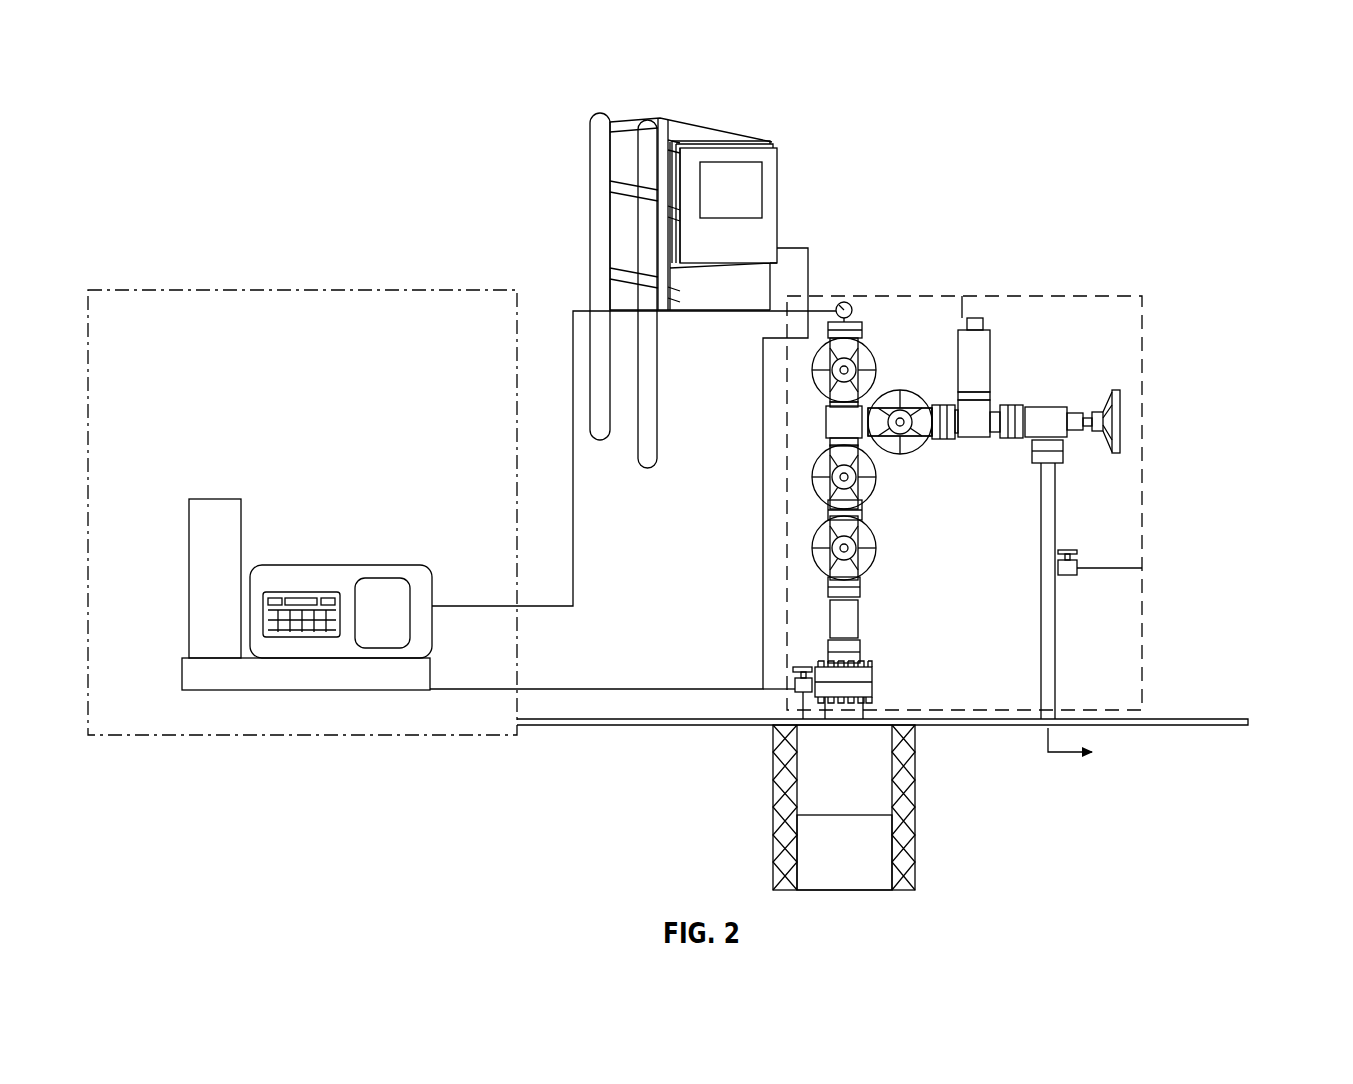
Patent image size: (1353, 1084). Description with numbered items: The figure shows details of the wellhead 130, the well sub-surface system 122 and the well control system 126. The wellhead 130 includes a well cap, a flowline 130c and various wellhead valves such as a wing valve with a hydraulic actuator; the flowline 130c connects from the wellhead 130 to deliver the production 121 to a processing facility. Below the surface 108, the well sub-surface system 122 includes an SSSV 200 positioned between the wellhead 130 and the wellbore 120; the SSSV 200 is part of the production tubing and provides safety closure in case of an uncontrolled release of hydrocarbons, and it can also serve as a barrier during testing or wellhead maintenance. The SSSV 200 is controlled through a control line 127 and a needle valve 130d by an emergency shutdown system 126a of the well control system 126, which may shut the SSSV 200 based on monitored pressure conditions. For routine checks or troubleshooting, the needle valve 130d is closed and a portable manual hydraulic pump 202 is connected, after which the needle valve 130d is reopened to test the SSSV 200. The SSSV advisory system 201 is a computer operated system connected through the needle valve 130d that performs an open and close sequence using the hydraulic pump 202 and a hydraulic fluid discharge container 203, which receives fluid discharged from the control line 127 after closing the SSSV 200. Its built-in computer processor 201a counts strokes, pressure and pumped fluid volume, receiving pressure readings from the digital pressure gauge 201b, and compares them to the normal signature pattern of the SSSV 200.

The well control system 126 is at (563, 118).
The emergency shutdown system (ESD) 126a is at (757, 120).
The SSSV advisory system 201 is at (400, 285).
The hydraulic fluid discharge container 203 is at (208, 490).
The computer processor 201a is at (350, 565).
The hydraulic pump 202 is at (265, 693).
The control line 127 is at (660, 688).
The digital pressure gauge 201b is at (849, 302).
The wellhead 130 is at (1040, 297).
The flowline 130c is at (1040, 640).
The needle valve 130d is at (802, 697).
The surface 108 is at (1152, 712).
The production 121 is at (1139, 764).
The wellbore 120 is at (913, 797).
The well sub-surface system 122 is at (745, 838).
The SSSV (subsurface safety valve) 200 is at (865, 881).